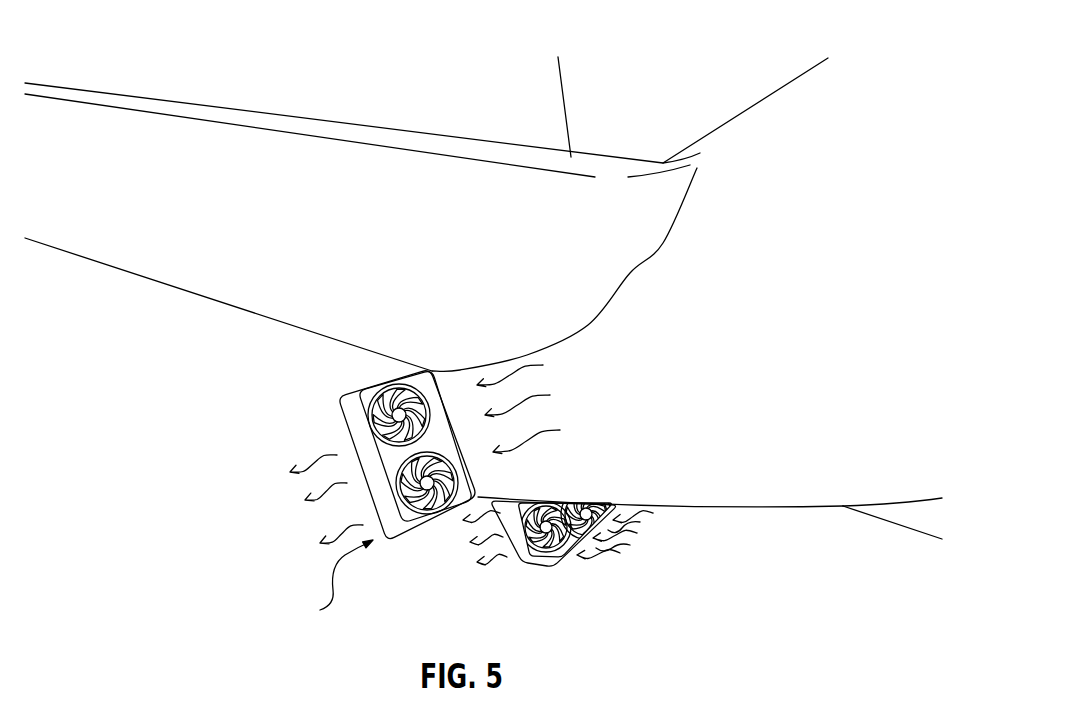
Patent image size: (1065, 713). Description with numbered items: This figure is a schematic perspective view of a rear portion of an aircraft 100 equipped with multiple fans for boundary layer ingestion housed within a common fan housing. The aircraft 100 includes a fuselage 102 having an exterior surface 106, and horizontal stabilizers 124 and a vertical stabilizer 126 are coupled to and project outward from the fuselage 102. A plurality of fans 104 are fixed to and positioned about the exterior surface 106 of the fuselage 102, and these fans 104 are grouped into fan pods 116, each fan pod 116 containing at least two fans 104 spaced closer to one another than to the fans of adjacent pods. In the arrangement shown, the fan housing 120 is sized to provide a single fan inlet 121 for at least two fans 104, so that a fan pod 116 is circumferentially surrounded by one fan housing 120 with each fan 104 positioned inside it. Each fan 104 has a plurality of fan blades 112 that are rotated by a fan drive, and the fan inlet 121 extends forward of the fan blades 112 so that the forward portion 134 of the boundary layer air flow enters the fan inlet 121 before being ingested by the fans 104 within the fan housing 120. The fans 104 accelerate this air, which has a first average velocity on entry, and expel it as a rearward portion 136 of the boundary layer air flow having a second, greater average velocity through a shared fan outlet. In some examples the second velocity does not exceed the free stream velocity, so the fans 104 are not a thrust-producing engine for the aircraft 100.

The aircraft 100 is at (683, 58).
The fuselage 102 is at (824, 513).
The fan 104 is at (393, 390).
The exterior surface 106 is at (740, 507).
The fan blade 112 is at (377, 385).
The fan pod 116 is at (329, 582).
The fan housing 120 is at (340, 403).
The fan inlet 121 is at (427, 372).
The horizontal stabilizer 124 is at (320, 162).
The vertical stabilizer 126 is at (580, 98).
The forward portion of the boundary layer air flow 134 is at (524, 368).
The rearward portion of the boundary layer air flow 136 is at (310, 483).